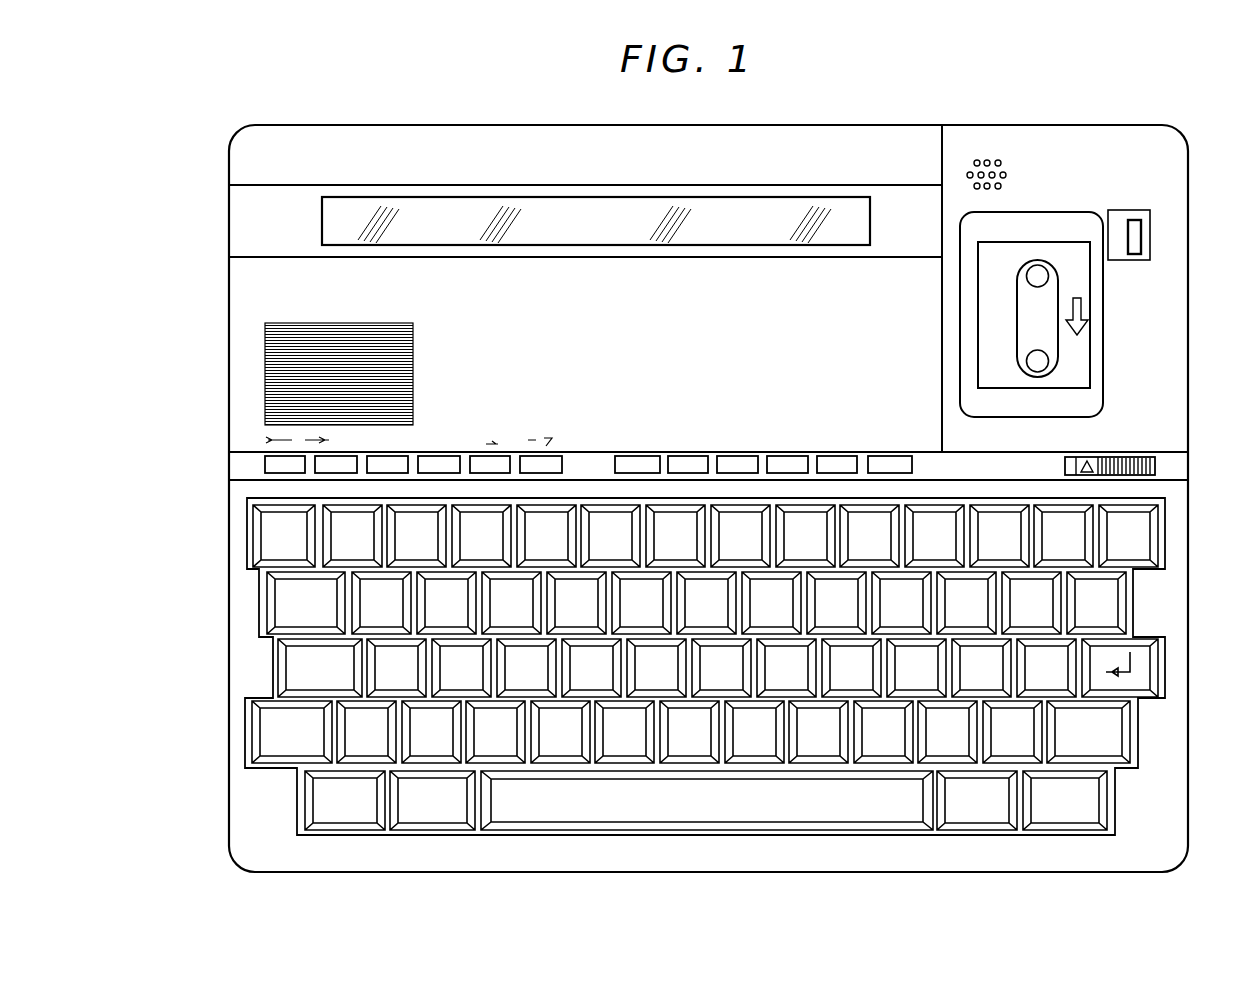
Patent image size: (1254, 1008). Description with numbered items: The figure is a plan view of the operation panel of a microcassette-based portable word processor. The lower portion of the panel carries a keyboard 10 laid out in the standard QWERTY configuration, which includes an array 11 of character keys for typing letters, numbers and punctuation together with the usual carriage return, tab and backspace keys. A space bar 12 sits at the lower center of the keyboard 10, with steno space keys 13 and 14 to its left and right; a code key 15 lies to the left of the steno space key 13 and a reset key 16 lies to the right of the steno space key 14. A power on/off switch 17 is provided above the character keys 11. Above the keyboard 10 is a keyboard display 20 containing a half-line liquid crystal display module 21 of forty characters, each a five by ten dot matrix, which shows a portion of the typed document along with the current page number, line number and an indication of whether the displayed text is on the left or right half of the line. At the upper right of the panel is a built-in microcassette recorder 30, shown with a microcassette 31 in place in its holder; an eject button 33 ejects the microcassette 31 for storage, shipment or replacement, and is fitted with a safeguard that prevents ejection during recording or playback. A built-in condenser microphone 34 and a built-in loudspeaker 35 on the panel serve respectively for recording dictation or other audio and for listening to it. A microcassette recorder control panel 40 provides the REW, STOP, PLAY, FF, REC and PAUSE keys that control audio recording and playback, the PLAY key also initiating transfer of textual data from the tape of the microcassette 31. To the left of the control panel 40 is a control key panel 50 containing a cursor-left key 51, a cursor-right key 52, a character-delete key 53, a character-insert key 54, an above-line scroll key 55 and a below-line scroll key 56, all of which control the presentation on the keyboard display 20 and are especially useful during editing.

The keyboard 10 is at (733, 683).
The array of character keys 11 is at (1145, 680).
The space bar 12 is at (608, 812).
The steno space key 13 is at (430, 831).
The steno space key 14 is at (970, 831).
The code key 15 is at (355, 831).
The reset key 16 is at (1052, 831).
The power on/off switch 17 is at (1130, 462).
The keyboard display 20 is at (243, 227).
The liquid crystal display module 21 is at (376, 207).
The microcassette recorder 30 is at (1197, 284).
The microcassette 31 is at (1087, 344).
The eject button 33 is at (1140, 232).
The condenser microphone 34 is at (979, 160).
The loudspeaker 35 is at (268, 346).
The microcassette recorder control panel 40 is at (914, 484).
The control key panel 50 is at (382, 440).
The cursor-left key 51 is at (268, 466).
The cursor-right key 52 is at (330, 462).
The character-delete key 53 is at (396, 441).
The character-insert key 54 is at (462, 443).
The above-line scroll key 55 is at (510, 443).
The below-line scroll key 56 is at (545, 443).